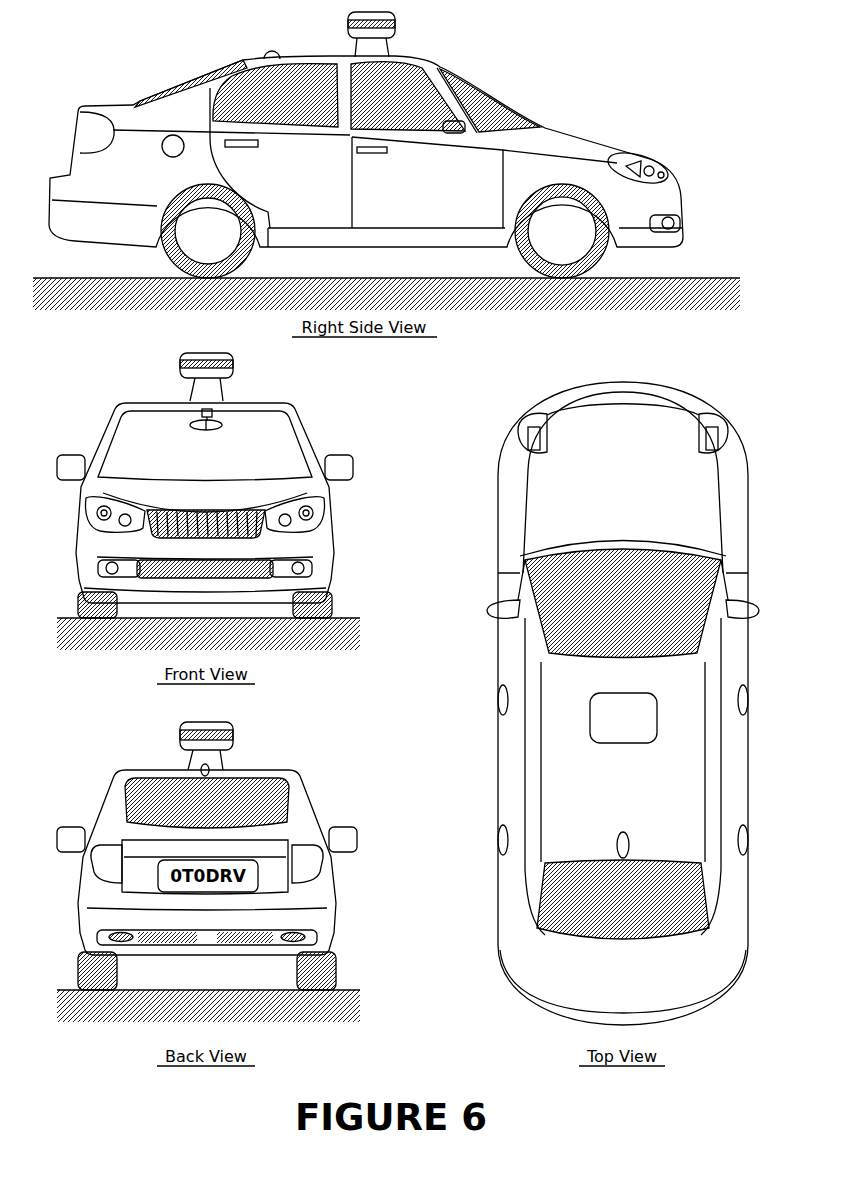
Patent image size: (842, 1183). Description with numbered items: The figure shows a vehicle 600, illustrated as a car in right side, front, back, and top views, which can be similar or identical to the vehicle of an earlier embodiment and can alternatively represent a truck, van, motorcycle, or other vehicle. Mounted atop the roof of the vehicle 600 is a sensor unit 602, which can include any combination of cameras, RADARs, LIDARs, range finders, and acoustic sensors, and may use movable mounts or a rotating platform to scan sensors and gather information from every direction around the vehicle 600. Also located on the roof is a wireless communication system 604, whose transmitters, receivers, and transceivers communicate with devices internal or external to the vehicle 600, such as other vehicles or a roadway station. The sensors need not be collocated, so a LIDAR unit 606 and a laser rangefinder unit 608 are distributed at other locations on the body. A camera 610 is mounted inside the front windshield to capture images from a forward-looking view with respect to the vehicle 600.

The vehicle 600 is at (44, 99).
The sensor unit 602 is at (397, 28).
The wireless communication system 604 is at (268, 50).
The LIDAR unit 606 is at (680, 224).
The laser rangefinder unit 608 is at (664, 178).
The camera 610 is at (215, 414).